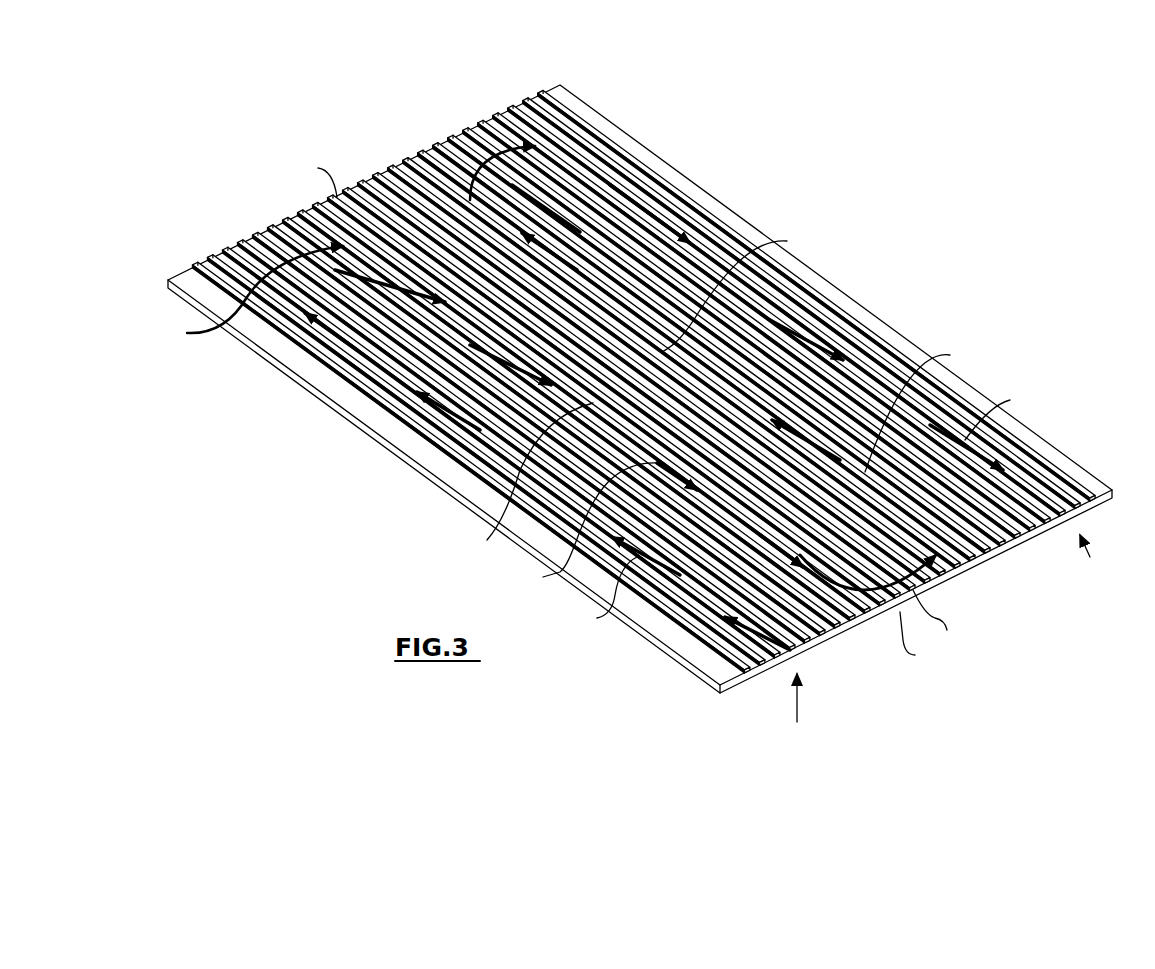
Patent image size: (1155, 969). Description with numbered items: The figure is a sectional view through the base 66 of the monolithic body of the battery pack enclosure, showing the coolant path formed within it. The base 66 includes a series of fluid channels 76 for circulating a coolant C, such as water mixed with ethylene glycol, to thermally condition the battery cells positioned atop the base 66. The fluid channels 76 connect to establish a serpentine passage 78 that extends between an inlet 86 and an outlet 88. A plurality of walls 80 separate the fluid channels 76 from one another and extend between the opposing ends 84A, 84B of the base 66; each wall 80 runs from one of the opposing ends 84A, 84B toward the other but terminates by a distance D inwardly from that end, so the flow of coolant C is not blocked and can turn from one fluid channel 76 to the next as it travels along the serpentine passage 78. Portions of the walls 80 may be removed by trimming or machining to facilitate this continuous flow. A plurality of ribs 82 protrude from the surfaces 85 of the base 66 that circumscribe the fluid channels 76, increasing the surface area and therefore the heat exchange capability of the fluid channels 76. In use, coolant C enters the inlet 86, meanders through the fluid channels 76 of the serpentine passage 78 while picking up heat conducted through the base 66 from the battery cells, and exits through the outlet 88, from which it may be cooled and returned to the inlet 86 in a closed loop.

The base 66 is at (654, 387).
The serpentine passage 78 is at (398, 170).
The ribs 82 is at (845, 638).
The walls 80 is at (583, 232).
The fluid channels 76 is at (637, 390).
The coolant C is at (774, 486).
The distance D is at (255, 297).
The opposing end 84A is at (932, 641).
The opposing end 84B is at (302, 176).
The surfaces 85 is at (946, 618).
The inlet 86 is at (797, 720).
The outlet 88 is at (1090, 557).